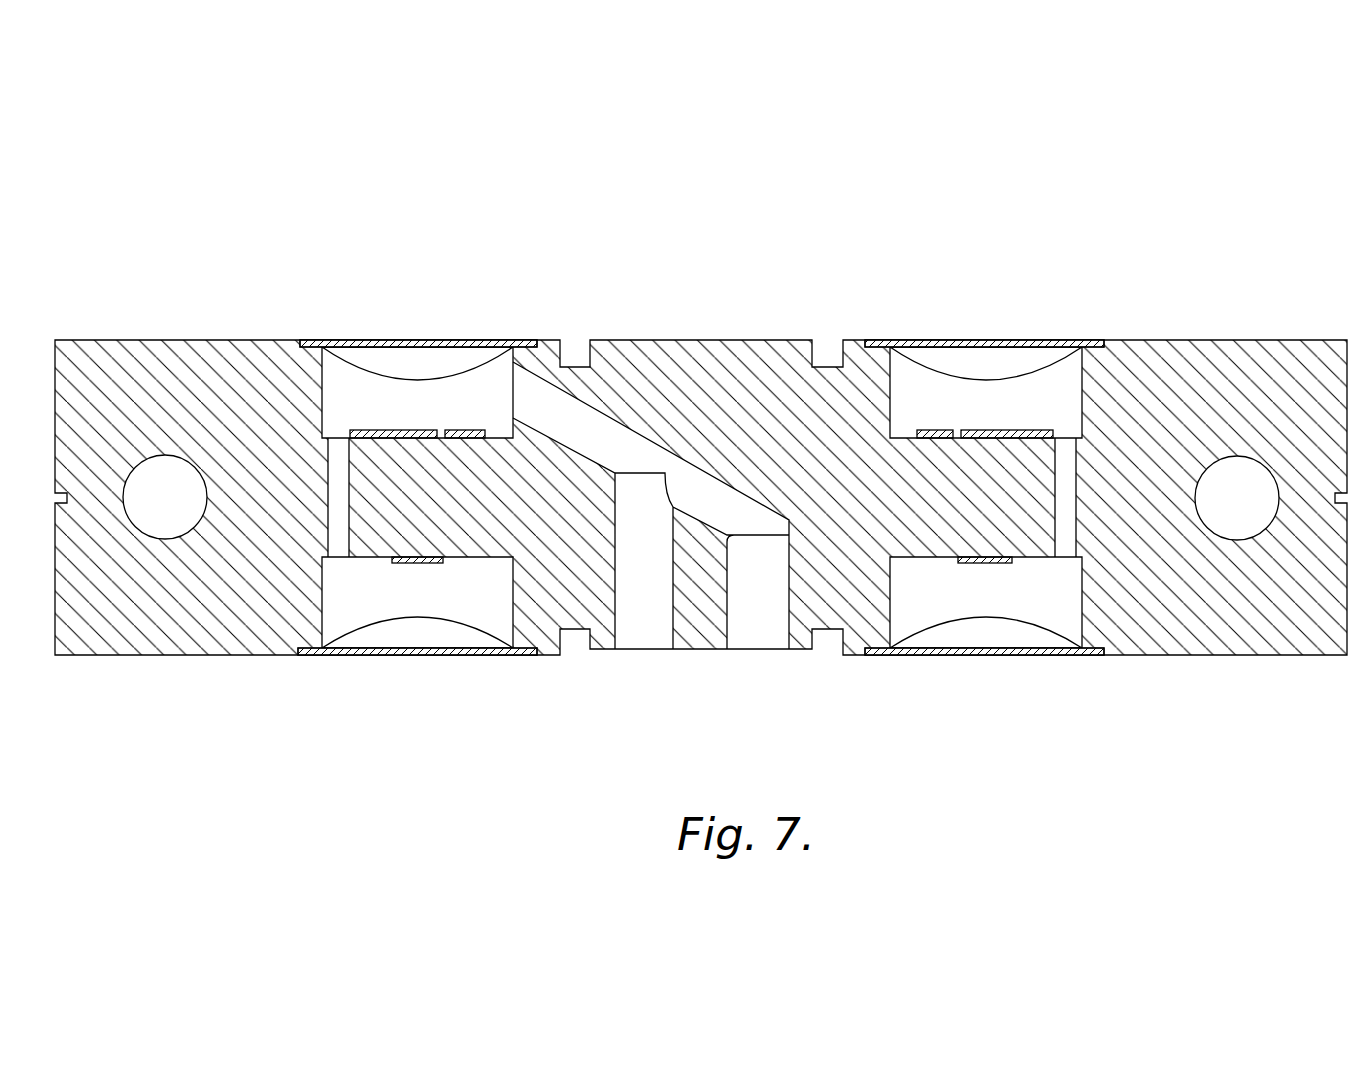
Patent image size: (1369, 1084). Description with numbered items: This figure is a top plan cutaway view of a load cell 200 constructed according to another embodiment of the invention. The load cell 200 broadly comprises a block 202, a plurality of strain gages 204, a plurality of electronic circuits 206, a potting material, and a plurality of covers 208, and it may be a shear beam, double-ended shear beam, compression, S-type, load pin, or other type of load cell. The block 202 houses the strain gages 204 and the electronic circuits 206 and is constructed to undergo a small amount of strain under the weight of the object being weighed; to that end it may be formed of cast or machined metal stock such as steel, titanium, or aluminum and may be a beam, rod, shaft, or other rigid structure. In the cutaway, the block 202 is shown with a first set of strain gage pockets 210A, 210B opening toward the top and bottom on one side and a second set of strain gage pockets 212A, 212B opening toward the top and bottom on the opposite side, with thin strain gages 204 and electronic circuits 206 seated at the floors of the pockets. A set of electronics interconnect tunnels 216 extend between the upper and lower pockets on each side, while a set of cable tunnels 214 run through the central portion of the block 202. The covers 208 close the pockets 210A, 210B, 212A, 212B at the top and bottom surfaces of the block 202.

The load cell 200 is at (701, 445).
The block 202 is at (1288, 338).
The strain gage 204 is at (413, 430).
The electronic circuit 206 is at (464, 430).
The cover 208 is at (504, 346).
The first strain gage pocket 210A is at (370, 615).
The first strain gage pocket 210B is at (371, 383).
The second strain gage pocket 212A is at (950, 616).
The second strain gage pocket 212B is at (1044, 377).
The cable tunnel 214 is at (765, 627).
The electronics interconnect tunnel 216 is at (340, 545).